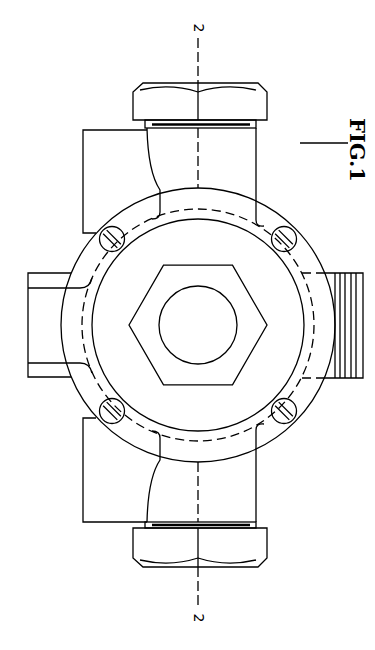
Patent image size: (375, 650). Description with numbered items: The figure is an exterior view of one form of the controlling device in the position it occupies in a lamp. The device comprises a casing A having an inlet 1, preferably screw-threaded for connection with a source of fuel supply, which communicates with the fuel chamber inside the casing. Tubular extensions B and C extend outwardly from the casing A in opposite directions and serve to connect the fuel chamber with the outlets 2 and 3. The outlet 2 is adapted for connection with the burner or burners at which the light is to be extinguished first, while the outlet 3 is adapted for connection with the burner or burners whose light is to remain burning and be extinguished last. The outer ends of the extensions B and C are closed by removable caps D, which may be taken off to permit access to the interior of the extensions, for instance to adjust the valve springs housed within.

The inlet 1 is at (342, 378).
The outlet 2 is at (93, 188).
The outlet 3 is at (93, 485).
The casing A is at (278, 435).
The tubular extension B is at (205, 177).
The tubular extension C is at (205, 473).
The removable cap D is at (163, 95).